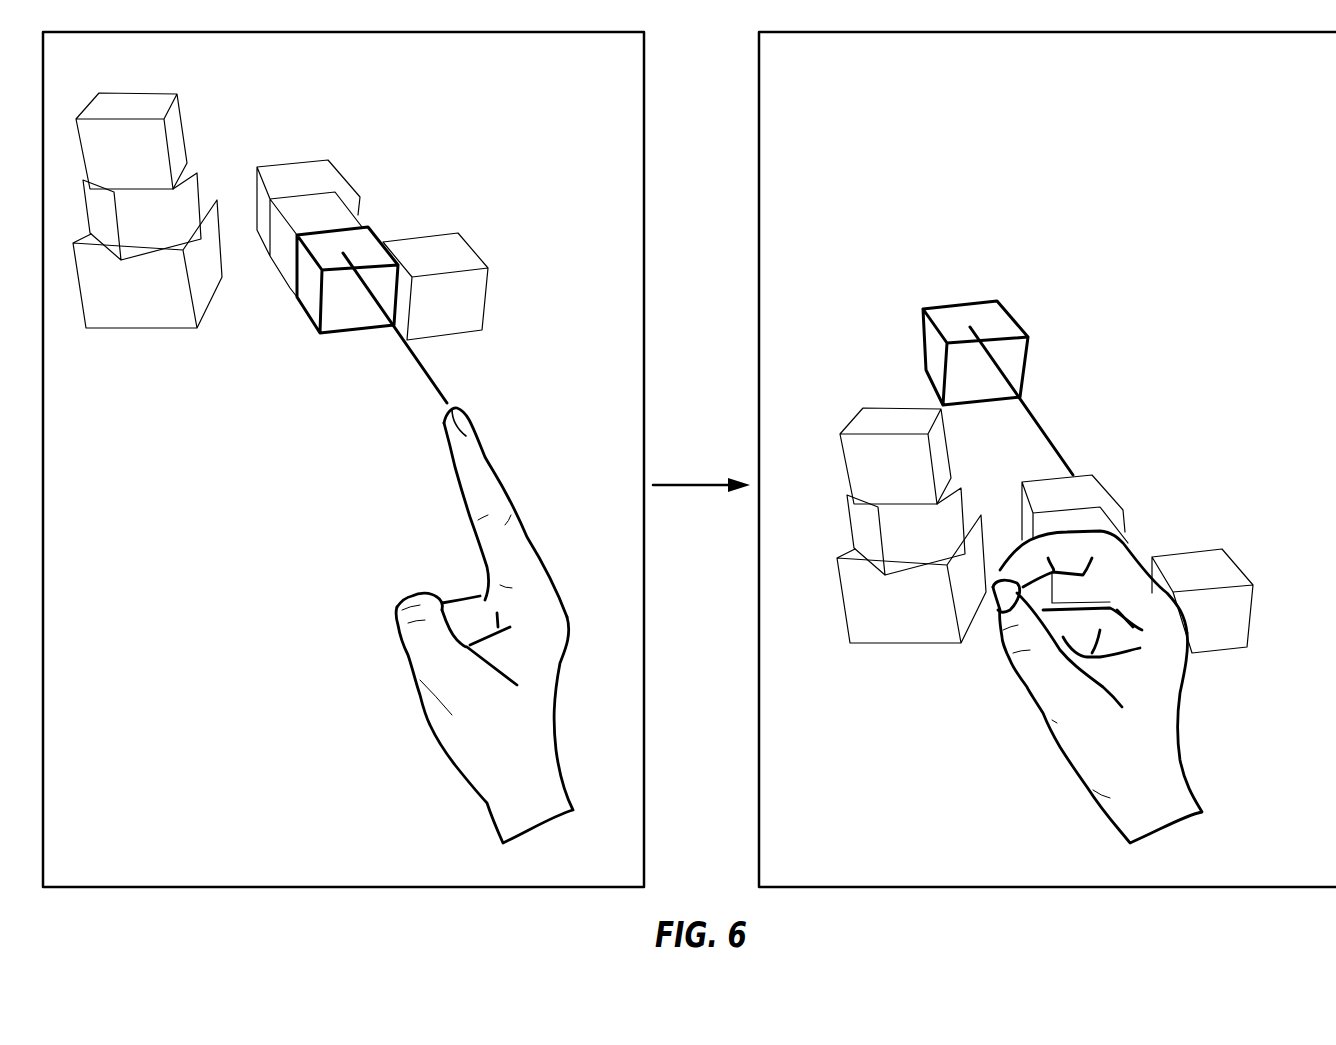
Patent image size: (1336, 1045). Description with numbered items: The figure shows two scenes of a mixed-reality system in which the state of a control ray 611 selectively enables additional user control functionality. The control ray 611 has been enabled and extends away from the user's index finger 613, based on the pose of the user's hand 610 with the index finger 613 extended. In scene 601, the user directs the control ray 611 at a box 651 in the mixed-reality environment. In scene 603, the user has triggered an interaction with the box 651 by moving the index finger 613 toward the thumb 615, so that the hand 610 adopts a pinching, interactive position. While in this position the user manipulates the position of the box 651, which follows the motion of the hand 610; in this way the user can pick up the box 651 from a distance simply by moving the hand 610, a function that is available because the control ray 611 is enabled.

The scene 601 is at (533, 134).
The scene 603 is at (1225, 134).
The box 651 is at (375, 232).
The control ray 611 is at (427, 372).
The index finger 613 is at (507, 487).
The thumb 615 is at (402, 650).
The hand 610 is at (483, 802).